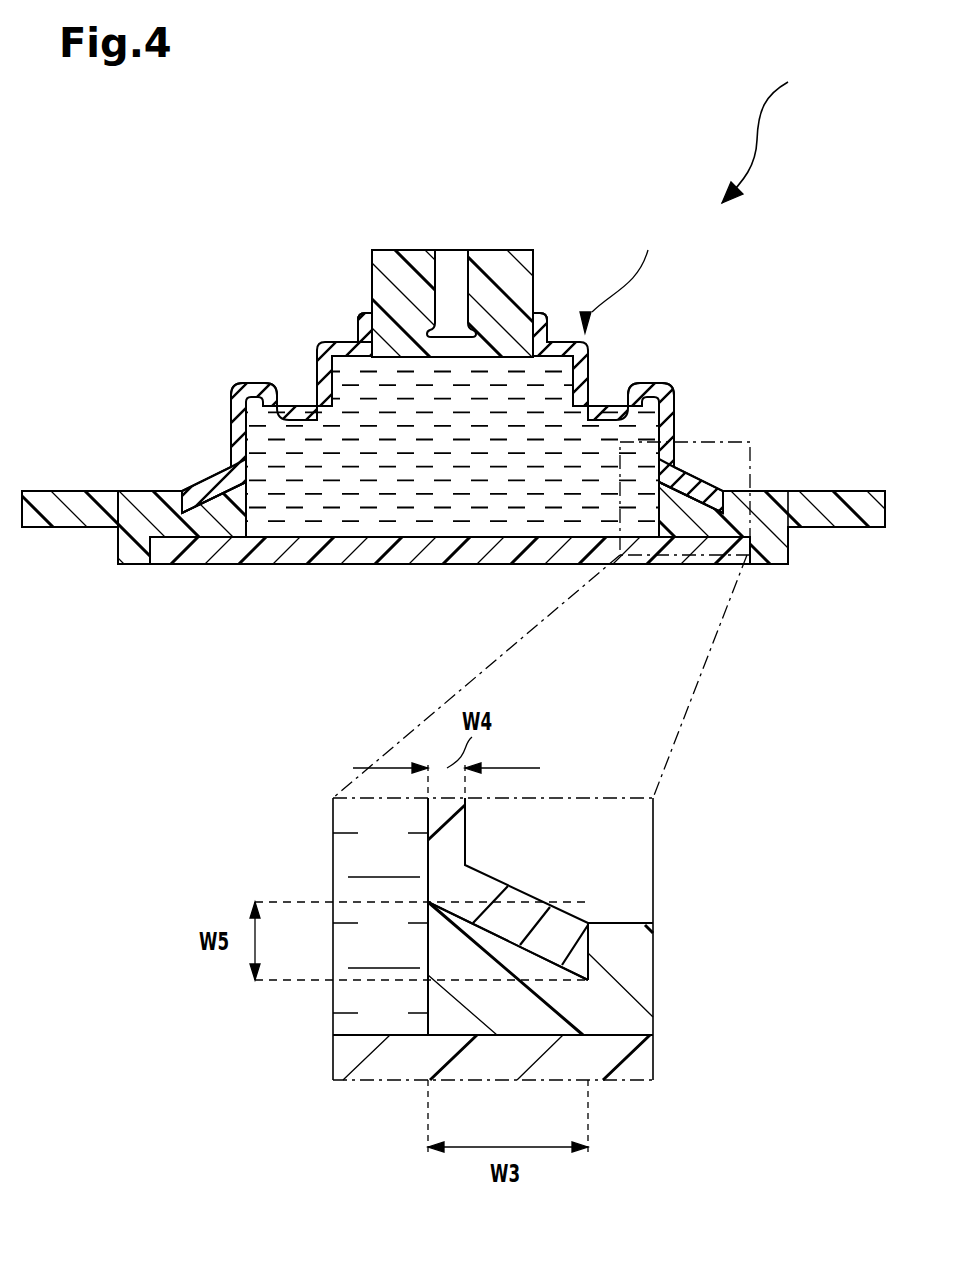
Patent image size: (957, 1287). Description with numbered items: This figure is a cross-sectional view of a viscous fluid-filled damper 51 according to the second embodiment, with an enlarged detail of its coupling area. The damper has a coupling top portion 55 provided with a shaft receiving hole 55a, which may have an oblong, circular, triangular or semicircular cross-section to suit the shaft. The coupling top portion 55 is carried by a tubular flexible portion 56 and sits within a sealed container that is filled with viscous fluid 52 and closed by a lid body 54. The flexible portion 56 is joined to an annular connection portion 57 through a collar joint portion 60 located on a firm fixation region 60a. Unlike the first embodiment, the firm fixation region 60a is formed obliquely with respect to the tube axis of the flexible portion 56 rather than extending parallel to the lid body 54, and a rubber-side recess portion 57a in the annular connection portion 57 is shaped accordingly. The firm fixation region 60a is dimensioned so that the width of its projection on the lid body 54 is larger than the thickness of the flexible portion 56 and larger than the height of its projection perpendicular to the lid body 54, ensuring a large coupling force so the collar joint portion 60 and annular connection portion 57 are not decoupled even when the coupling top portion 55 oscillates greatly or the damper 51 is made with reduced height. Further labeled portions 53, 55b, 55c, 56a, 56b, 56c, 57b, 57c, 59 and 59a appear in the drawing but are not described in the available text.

The viscous fluid-filled damper 51 is at (778, 128).
The viscous fluid 52 is at (375, 480).
The gap 53 is at (627, 276).
The lid body 54 is at (250, 565).
The coupling top portion 55 is at (405, 250).
The shaft receiving hole 55a is at (458, 264).
The bottom surface of core member 55b is at (448, 358).
The side surface of core member 55c is at (372, 285).
The flexible portion 56 is at (612, 405).
The upper wall portion 56a is at (645, 388).
The left bead portion 56b is at (231, 405).
The right bead portion 56c is at (652, 384).
The annular connection portion 57 is at (850, 528).
The rubber-side recess portion 57a is at (722, 498).
The bottom surface of housing 57b is at (160, 565).
The flange portion 57c is at (85, 505).
The crimped portion 59 is at (540, 325).
The crimped end portion 59a is at (370, 308).
The collar joint portion 60 is at (545, 888).
The firm fixation region 60a is at (687, 555).